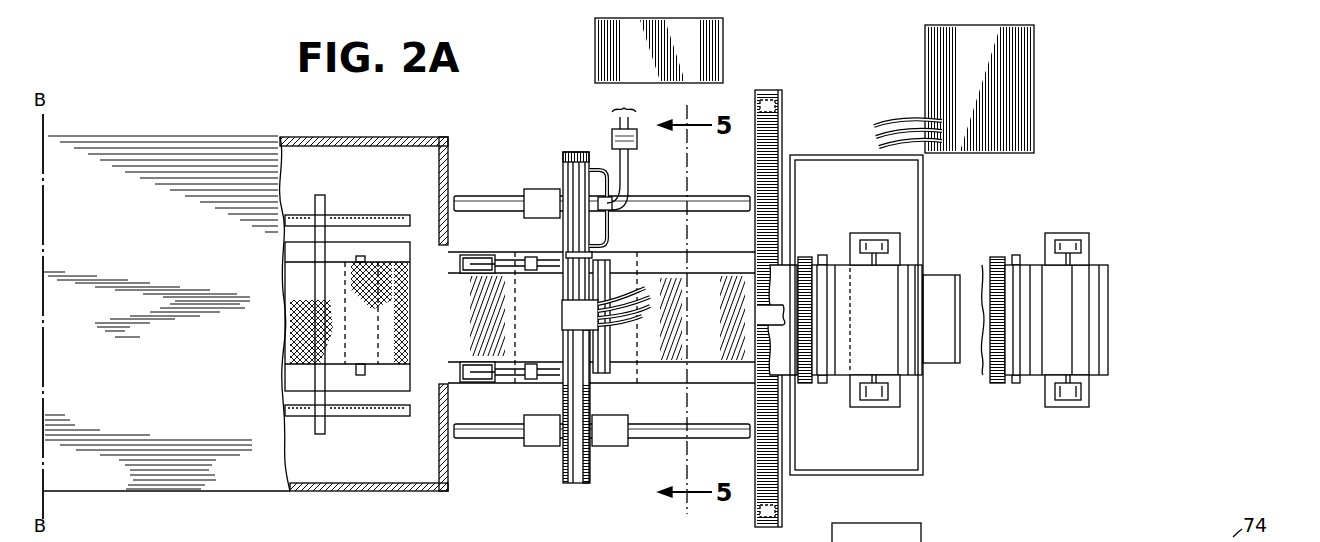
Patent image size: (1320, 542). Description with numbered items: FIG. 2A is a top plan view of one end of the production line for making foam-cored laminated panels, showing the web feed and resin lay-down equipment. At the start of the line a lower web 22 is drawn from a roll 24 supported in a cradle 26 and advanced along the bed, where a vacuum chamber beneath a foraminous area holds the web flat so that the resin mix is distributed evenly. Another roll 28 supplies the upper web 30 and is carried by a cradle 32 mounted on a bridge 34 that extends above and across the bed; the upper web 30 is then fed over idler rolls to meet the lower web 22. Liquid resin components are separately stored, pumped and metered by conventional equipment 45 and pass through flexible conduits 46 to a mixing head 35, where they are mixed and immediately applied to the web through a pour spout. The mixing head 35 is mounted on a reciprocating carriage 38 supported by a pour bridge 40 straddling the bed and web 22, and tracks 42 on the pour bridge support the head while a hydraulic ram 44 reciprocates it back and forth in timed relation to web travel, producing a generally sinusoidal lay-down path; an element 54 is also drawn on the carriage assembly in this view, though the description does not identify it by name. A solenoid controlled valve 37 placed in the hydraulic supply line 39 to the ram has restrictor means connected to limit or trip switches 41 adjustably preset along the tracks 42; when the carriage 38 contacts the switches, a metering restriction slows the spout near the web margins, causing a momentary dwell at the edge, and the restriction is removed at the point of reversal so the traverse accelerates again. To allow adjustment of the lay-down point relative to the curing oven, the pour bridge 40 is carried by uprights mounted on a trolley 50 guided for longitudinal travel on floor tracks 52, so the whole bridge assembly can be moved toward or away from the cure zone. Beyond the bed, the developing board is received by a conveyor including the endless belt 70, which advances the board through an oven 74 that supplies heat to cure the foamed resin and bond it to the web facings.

The lower web 22 is at (700, 312).
The roll 24 is at (1090, 320).
The cradle 26 is at (1088, 247).
The roll 28 is at (861, 310).
The upper web 30 is at (516, 324).
The cradle 32 is at (868, 240).
The bridge 34 is at (925, 212).
The mixing head 35 is at (605, 332).
The solenoid controlled valve 37 is at (637, 143).
The reciprocating carriage 38 is at (568, 325).
The hydraulic supply line 39 is at (624, 107).
The pour bridge 40 is at (558, 464).
The limit or trip switches 41 is at (560, 289).
The tracks 42 is at (575, 400).
The hydraulic ram 44 is at (585, 158).
The resin storage, pumping and metering equipment 45 is at (1012, 90).
The flexible conduits 46 is at (652, 312).
The trolley 50 is at (545, 196).
The floor tracks 52 is at (490, 200).
The mounting plate 54 is at (598, 275).
The endless belt 70 is at (306, 300).
The oven 74 is at (445, 136).